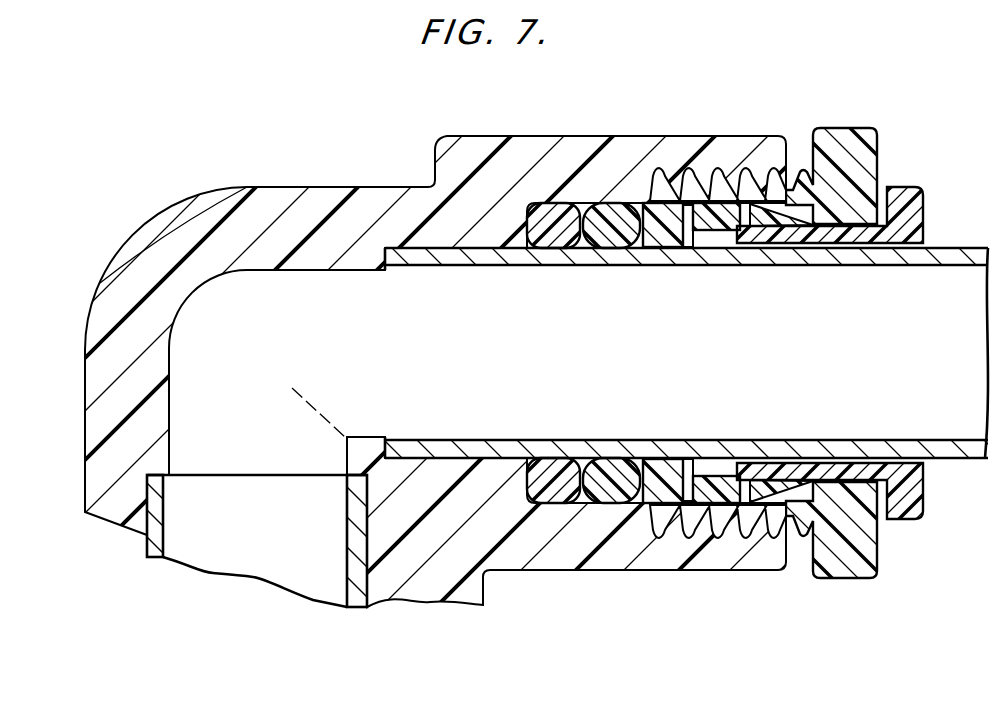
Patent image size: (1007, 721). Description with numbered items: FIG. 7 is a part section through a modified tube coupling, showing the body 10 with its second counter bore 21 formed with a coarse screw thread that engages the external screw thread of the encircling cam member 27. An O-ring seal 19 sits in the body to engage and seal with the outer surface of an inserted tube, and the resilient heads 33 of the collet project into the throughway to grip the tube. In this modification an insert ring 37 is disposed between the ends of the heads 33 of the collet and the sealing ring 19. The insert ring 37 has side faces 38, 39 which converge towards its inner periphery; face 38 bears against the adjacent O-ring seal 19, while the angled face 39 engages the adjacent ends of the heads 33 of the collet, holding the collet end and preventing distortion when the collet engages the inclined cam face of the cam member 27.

The body 10 is at (208, 208).
The O-ring seal 19 is at (604, 232).
The second counter bore 21 is at (708, 172).
The cam member 27 is at (748, 177).
The heads of the collet 33 is at (715, 228).
The insert ring 37 is at (687, 225).
The side face 38 is at (665, 221).
The side face 39 is at (705, 230).